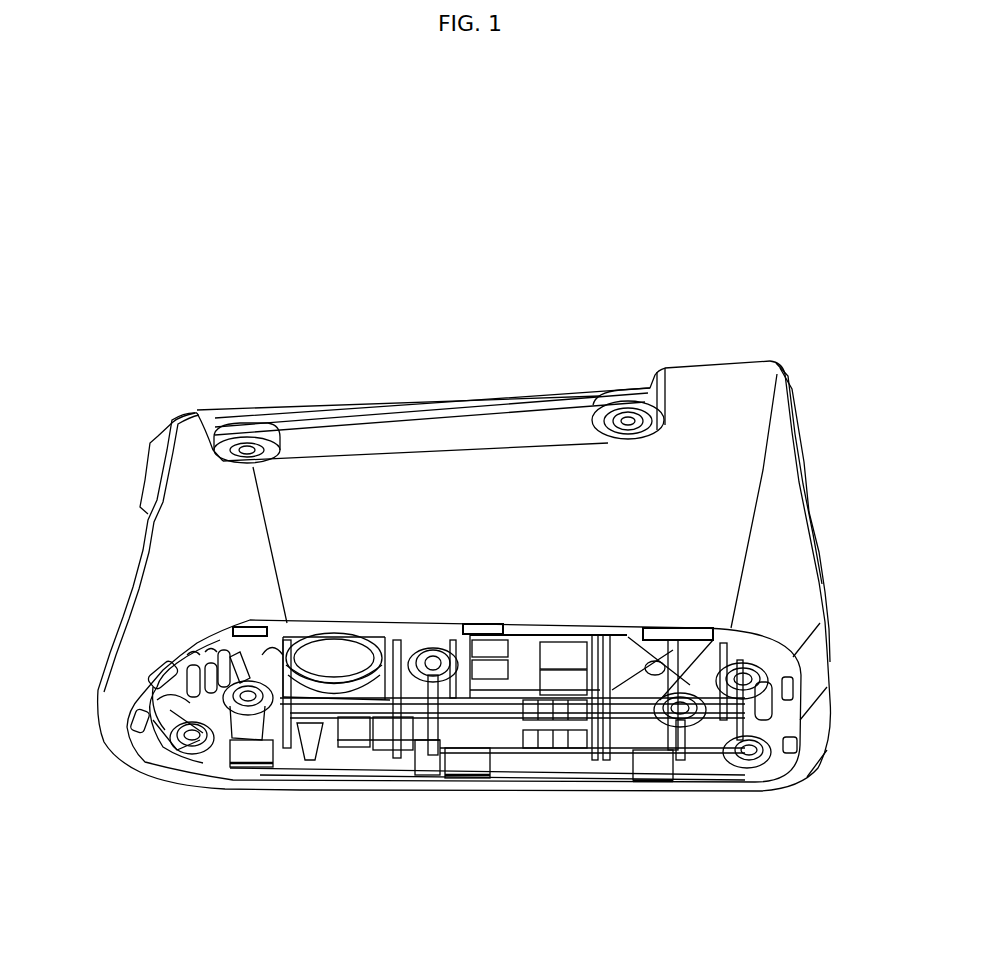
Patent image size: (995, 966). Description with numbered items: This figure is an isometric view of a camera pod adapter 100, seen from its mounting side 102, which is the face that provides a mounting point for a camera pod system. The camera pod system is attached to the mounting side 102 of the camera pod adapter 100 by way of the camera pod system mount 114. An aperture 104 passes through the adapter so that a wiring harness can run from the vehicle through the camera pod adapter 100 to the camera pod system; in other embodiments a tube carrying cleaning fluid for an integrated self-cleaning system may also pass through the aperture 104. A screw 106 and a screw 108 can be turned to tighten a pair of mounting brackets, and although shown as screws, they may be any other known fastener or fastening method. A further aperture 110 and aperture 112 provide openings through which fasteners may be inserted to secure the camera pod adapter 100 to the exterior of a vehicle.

The camera pod adapter 100 is at (466, 478).
The mounting side 102 is at (197, 658).
The aperture 104 is at (336, 660).
The screw 106 is at (249, 700).
The screw 108 is at (682, 710).
The aperture 110 is at (242, 448).
The aperture 112 is at (627, 418).
The camera pod system mount 114 is at (193, 733).